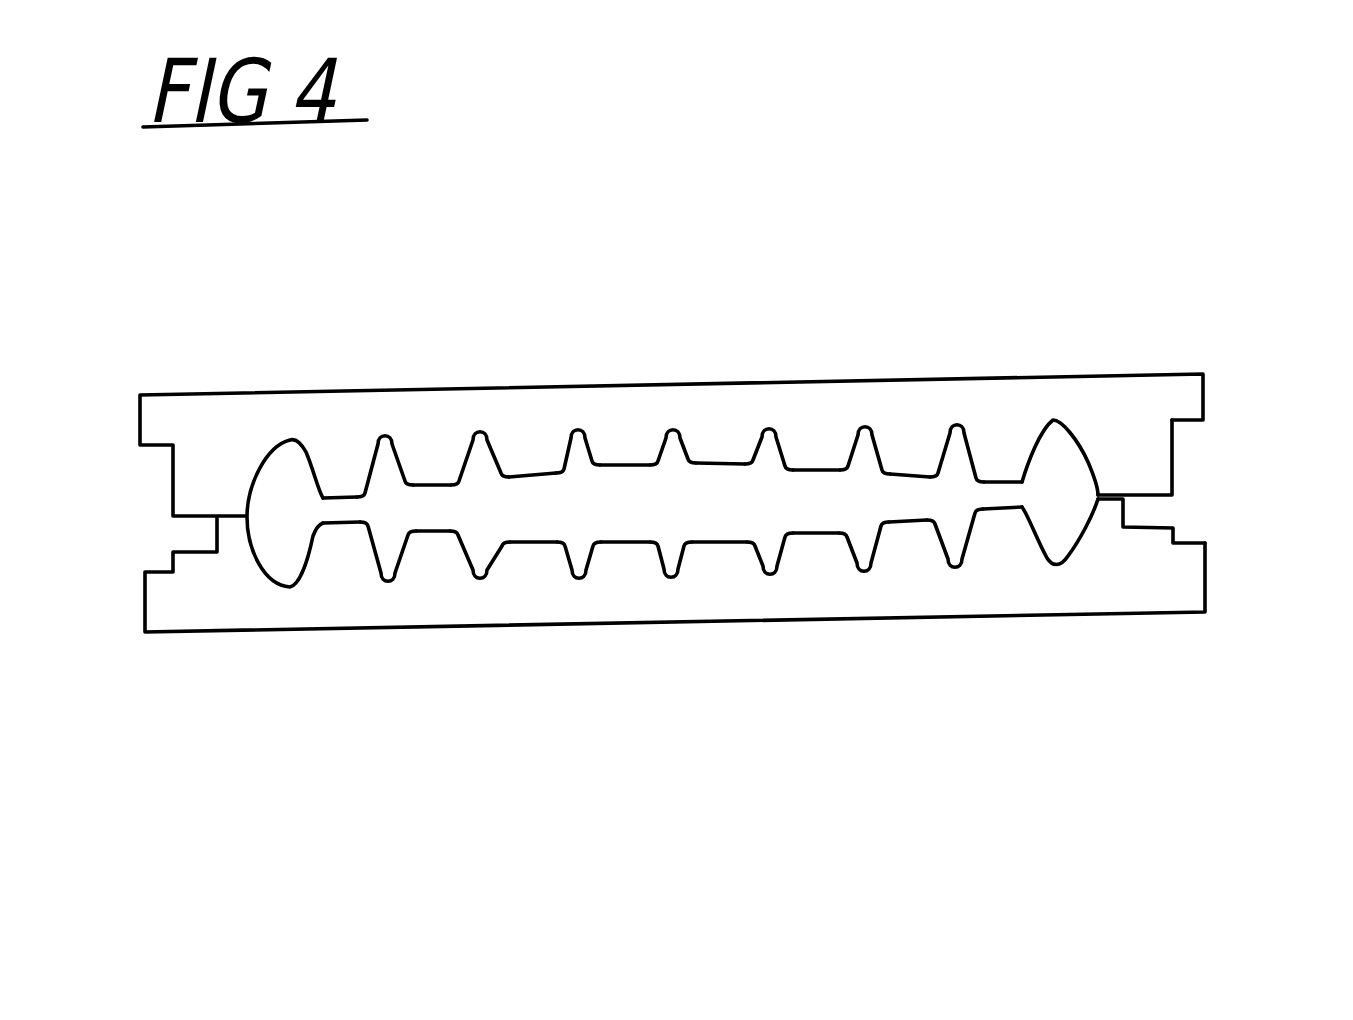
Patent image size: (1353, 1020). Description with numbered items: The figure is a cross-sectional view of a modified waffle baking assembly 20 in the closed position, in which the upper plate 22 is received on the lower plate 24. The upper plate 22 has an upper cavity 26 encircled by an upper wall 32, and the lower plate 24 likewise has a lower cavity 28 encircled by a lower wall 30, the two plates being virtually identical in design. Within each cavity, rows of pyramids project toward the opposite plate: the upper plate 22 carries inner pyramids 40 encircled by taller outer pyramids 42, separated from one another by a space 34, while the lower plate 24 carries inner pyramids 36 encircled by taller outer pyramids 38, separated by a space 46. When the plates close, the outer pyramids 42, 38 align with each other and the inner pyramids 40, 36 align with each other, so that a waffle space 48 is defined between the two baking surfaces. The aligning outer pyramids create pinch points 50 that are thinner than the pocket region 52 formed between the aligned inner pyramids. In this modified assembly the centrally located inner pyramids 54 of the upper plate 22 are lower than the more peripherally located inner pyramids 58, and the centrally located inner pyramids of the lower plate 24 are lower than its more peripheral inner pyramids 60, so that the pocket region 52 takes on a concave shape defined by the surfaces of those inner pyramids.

The waffle baking assembly 20 is at (590, 252).
The upper plate 22 is at (967, 372).
The lower plate 24 is at (1005, 623).
The upper cavity 26 is at (1050, 429).
The lower cavity 28 is at (1070, 550).
The lower wall 30 is at (1140, 525).
The upper wall 32 is at (1173, 462).
The space 34 is at (947, 442).
The inner pyramids 36 is at (417, 537).
The outer pyramids 38 is at (1003, 515).
The inner pyramids 40 is at (438, 483).
The outer pyramids 42 is at (997, 480).
The space 46 is at (957, 553).
The waffle space 48 is at (897, 495).
The pinch points 50 is at (340, 508).
The pocket region 52 is at (737, 478).
The centrally located inner pyramids 54 is at (615, 462).
The peripherally located inner pyramids 58 is at (525, 477).
The peripherally located inner pyramids 60 is at (525, 548).